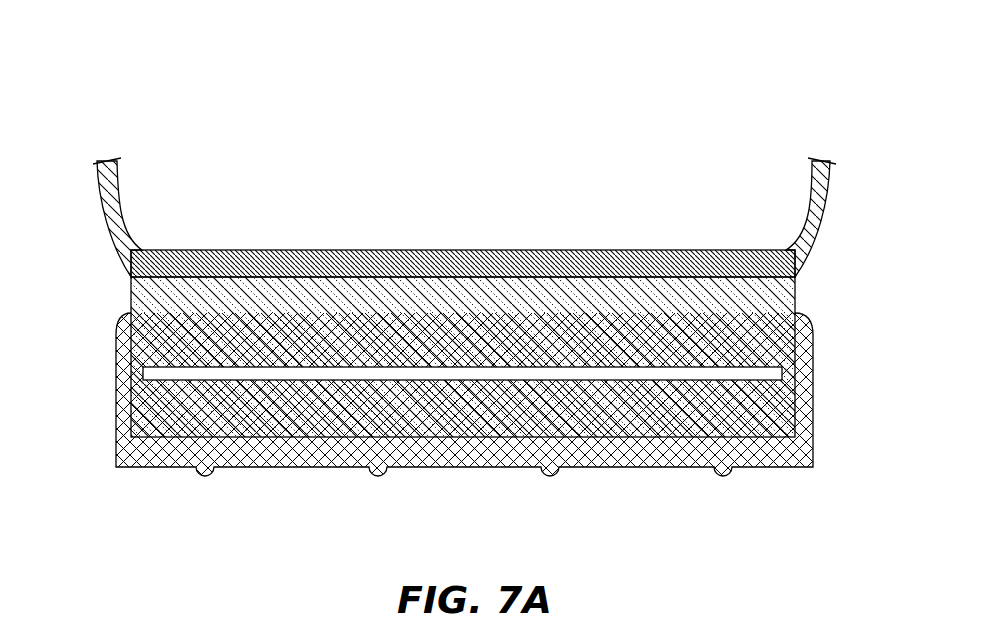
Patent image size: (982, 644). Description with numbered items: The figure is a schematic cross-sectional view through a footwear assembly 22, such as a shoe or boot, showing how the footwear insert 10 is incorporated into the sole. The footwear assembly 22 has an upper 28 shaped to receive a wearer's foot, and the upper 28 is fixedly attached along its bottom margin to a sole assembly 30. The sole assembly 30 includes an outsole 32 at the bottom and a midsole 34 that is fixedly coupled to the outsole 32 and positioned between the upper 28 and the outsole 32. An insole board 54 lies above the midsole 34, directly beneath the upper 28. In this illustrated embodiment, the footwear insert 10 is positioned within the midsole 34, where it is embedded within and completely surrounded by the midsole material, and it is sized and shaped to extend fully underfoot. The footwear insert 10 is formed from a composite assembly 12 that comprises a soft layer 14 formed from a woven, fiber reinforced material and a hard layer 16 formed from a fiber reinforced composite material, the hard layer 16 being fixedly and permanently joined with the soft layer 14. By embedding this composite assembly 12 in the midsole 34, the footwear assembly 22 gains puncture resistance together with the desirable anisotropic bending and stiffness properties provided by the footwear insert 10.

The footwear insert 10 is at (270, 385).
The composite assembly 12 is at (148, 372).
The soft layer 14 is at (755, 372).
The hard layer 16 is at (147, 382).
The footwear assembly 22 is at (63, 94).
The upper 28 is at (812, 202).
The sole assembly 30 is at (33, 298).
The outsole 32 is at (793, 450).
The midsole 34 is at (782, 297).
The insole board 54 is at (637, 258).